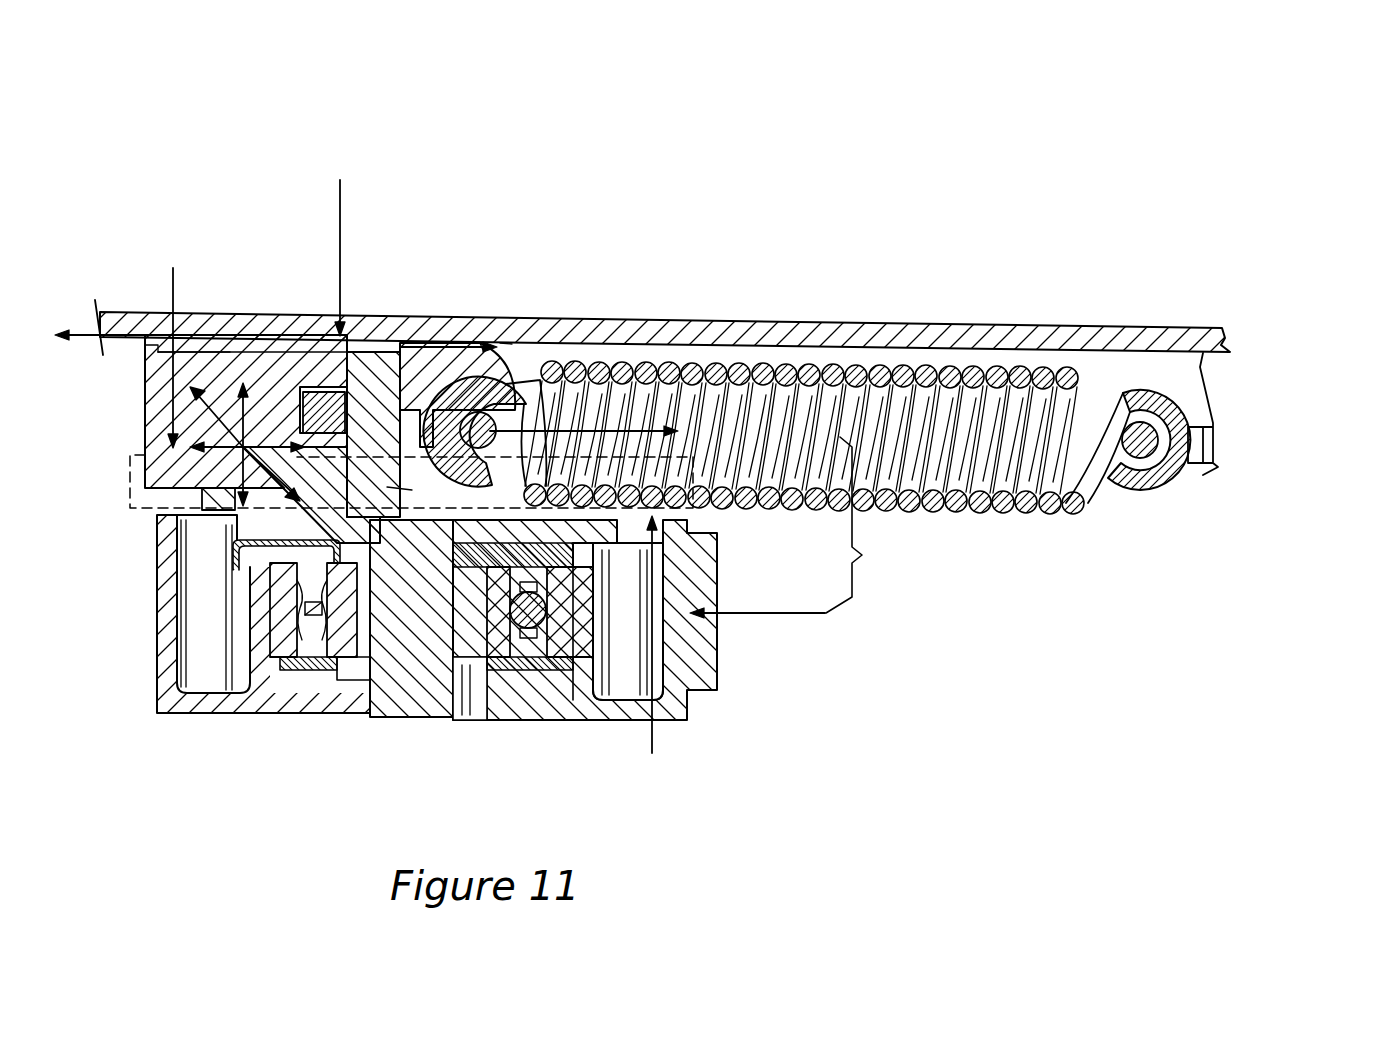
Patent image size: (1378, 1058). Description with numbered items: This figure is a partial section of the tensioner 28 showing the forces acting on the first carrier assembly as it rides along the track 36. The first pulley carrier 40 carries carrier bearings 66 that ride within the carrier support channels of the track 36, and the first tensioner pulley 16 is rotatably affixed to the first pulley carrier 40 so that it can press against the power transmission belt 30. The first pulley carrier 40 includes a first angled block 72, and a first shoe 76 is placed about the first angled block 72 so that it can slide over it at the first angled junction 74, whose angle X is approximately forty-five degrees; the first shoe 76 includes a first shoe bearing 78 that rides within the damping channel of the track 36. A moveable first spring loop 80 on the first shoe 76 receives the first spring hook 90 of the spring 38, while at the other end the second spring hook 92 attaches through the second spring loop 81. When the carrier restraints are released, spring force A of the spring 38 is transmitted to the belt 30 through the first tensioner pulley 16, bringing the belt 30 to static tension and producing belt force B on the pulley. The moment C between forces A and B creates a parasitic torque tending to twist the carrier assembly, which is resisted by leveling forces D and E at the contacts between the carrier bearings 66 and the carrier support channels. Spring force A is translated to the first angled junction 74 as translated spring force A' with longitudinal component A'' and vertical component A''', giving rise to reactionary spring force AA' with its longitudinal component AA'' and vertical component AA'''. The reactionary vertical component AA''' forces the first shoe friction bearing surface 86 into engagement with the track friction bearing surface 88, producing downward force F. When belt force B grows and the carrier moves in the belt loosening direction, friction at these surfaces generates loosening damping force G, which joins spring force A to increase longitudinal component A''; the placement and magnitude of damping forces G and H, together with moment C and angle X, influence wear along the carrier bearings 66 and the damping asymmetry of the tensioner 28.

The first tensioner pulley 16 is at (157, 717).
The tensioner 28 is at (1268, 122).
The power transmission belt 30 is at (700, 693).
The track 36 is at (1010, 320).
The spring 38 is at (1002, 517).
The first pulley carrier 40 is at (370, 643).
The carrier bearings 66 is at (130, 488).
The first angled block 72 is at (463, 335).
The first angled junction 74 is at (322, 380).
The first shoe 76 is at (142, 423).
The first shoe bearing 78 is at (437, 335).
The first spring loop 80 is at (483, 335).
The second spring loop 81 is at (1207, 497).
The first shoe friction bearing surface 86 is at (223, 335).
The track friction bearing surface 88 is at (200, 335).
The first spring hook 90 is at (498, 378).
The second spring hook 92 is at (1153, 385).
The spring force A is at (530, 310).
The translated spring force A' is at (195, 544).
The longitudinal component of translated spring force A'' is at (317, 349).
The vertical component of translated spring force A''' is at (166, 489).
The reactionary spring force AA' is at (145, 410).
The longitudinal component of reactionary spring force AA'' is at (149, 499).
The vertical component of reactionary spring force AA''' is at (270, 356).
The belt force B is at (757, 615).
The moment C is at (856, 525).
The leveling force D is at (653, 742).
The leveling force E is at (172, 300).
The downward force F is at (338, 207).
The loosening damping force G is at (490, 325).
The damping force H is at (96, 312).
The angle of first angled junction X is at (411, 492).